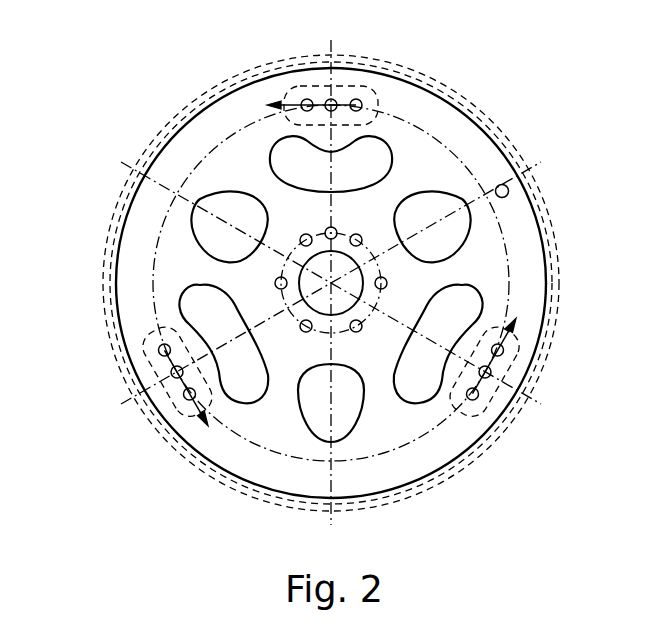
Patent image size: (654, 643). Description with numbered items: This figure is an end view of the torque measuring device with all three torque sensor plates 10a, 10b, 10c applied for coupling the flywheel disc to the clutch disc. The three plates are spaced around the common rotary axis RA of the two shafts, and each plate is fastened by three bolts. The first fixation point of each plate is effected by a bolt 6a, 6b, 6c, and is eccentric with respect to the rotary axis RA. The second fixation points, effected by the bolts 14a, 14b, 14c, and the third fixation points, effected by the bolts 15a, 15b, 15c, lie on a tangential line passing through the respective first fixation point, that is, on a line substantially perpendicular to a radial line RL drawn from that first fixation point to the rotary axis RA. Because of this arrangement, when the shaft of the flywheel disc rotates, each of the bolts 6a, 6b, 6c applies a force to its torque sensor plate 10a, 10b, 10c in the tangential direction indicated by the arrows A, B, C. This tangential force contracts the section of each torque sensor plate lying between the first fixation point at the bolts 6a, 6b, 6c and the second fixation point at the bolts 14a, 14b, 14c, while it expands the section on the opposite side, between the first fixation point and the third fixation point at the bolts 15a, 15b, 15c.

The fastening bolt 6a is at (334, 100).
The fastening bolt 14a is at (307, 99).
The fastening bolt 15a is at (362, 104).
The torque sensor plate 10a is at (358, 88).
The fastening bolt 6b is at (171, 372).
The fastening bolt 14b is at (186, 398).
The fastening bolt 15b is at (160, 346).
The torque sensor plate 10b is at (166, 398).
The fastening bolt 6c is at (490, 377).
The fastening bolt 14c is at (503, 353).
The fastening bolt 15c is at (468, 399).
The torque sensor plate 10c is at (494, 440).
The arrow A is at (270, 103).
The arrow B is at (206, 432).
The arrow C is at (515, 320).
The radial line RL is at (330, 196).
The rotary axis RA is at (332, 282).